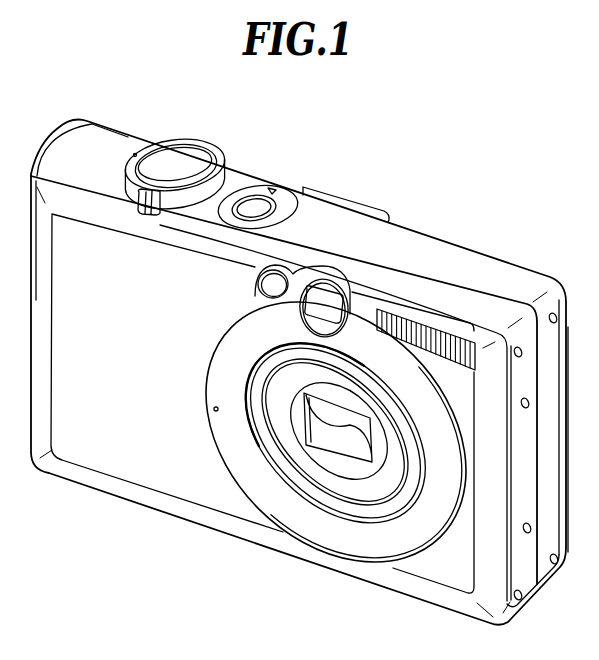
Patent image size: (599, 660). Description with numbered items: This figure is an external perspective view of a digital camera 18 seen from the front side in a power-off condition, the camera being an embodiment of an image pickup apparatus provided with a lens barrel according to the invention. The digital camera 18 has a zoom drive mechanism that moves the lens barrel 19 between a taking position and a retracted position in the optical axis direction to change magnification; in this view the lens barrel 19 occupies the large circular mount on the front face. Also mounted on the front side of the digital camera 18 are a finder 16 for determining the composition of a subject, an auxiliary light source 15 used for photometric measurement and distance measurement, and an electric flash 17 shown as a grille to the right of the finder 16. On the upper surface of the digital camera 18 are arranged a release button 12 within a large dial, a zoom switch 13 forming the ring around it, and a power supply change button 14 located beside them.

The release button 12 is at (182, 157).
The zoom switch 13 is at (218, 163).
The power supply change button 14 is at (252, 203).
The auxiliary light source 15 is at (282, 270).
The finder 16 is at (323, 294).
The electric flash 17 is at (426, 325).
The digital camera 18 is at (148, 470).
The lens barrel 19 is at (341, 480).